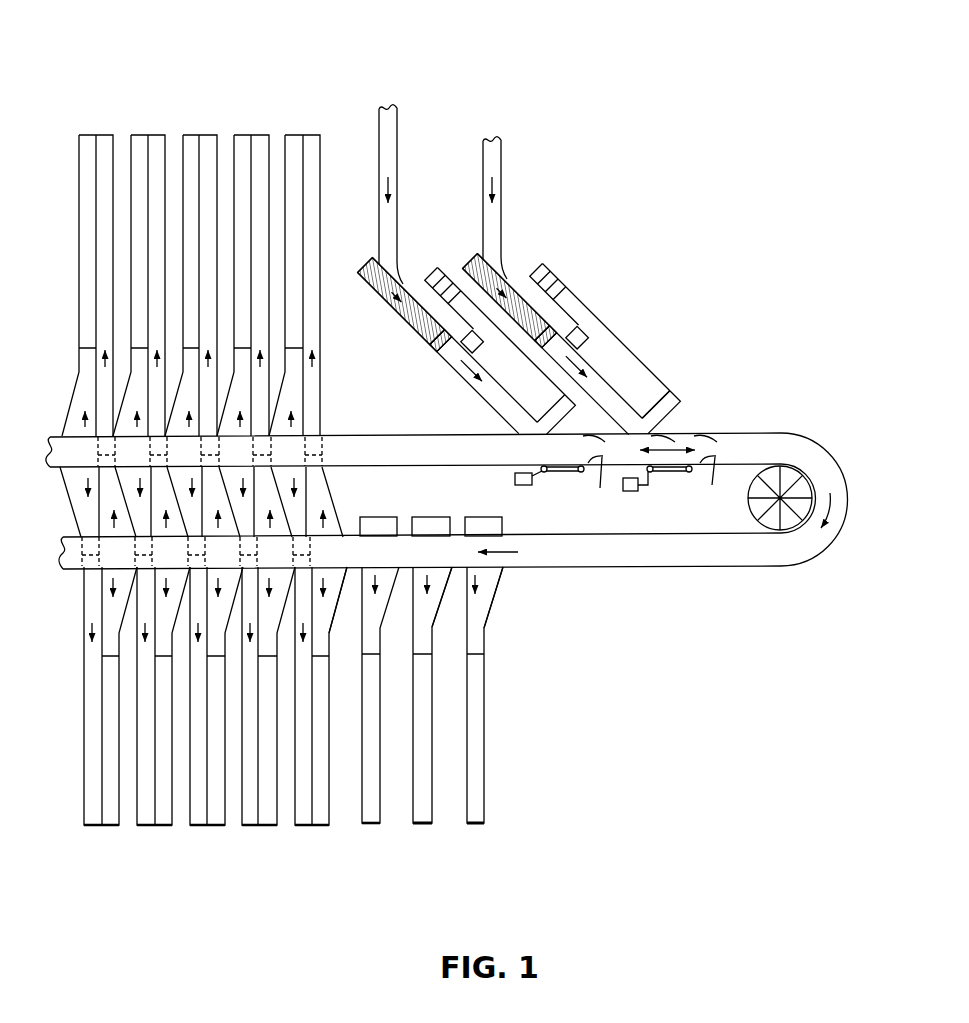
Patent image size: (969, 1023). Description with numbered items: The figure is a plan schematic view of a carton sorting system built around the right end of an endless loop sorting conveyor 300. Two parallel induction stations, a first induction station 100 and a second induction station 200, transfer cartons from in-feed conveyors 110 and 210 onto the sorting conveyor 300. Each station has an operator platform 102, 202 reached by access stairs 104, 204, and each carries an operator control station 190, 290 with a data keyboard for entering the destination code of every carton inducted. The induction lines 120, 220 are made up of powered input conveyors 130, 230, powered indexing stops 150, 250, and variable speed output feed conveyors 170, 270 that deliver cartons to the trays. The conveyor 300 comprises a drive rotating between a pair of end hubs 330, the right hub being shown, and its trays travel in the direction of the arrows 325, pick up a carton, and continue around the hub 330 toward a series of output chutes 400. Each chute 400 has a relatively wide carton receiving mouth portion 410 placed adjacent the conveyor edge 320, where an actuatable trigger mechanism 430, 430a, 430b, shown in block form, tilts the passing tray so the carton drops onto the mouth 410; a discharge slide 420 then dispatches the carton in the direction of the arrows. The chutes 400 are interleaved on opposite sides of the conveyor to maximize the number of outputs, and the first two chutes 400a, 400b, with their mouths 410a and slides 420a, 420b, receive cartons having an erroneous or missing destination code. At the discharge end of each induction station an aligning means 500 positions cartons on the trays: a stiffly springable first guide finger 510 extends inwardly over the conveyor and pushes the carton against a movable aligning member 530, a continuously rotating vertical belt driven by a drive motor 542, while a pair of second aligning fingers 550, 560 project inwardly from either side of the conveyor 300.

The first induction station 100 is at (580, 288).
The operator platform 102 is at (643, 365).
The access stairs 104 is at (556, 281).
The in-feed conveyor 110 is at (502, 158).
The induction line 120 is at (523, 289).
The powered input conveyor 130 is at (506, 282).
The powered indexing stop 150 is at (581, 317).
The variable speed output feed conveyor 170 is at (621, 411).
The operator control station 190 is at (587, 336).
The second induction station 200 is at (452, 274).
The operator platform 202 is at (524, 391).
The access stairs 204 is at (437, 268).
The in-feed conveyor 210 is at (398, 133).
The induction line 220 is at (369, 289).
The powered input conveyor 230 is at (402, 294).
The powered indexing stop 250 is at (438, 348).
The variable speed output feed conveyor 270 is at (466, 379).
The operator control station 290 is at (484, 353).
The sorting conveyor 300 is at (456, 505).
The conveyor edge 320 is at (631, 569).
The arrows 325 is at (400, 452).
The end hub 330 is at (797, 466).
The output chutes 400 is at (298, 128).
The output chute 400a is at (488, 813).
The output chute 400b is at (437, 819).
The carton receiving mouth portion 410 is at (331, 628).
The carton receiving mouth portion 410a is at (441, 611).
The discharge slide 420 is at (331, 809).
The discharge slide 420a is at (486, 711).
The discharge slide 420b is at (433, 727).
The actuatable trigger mechanism 430 is at (370, 517).
The actuatable trigger mechanism 430a is at (484, 517).
The actuatable trigger mechanism 430b is at (436, 517).
The aligning means 500 is at (712, 432).
The first guide finger 510 is at (556, 437).
The movable aligning member 530 is at (560, 474).
The drive motor 542 is at (527, 486).
The second aligning finger 550 is at (592, 439).
The second aligning finger 560 is at (661, 481).